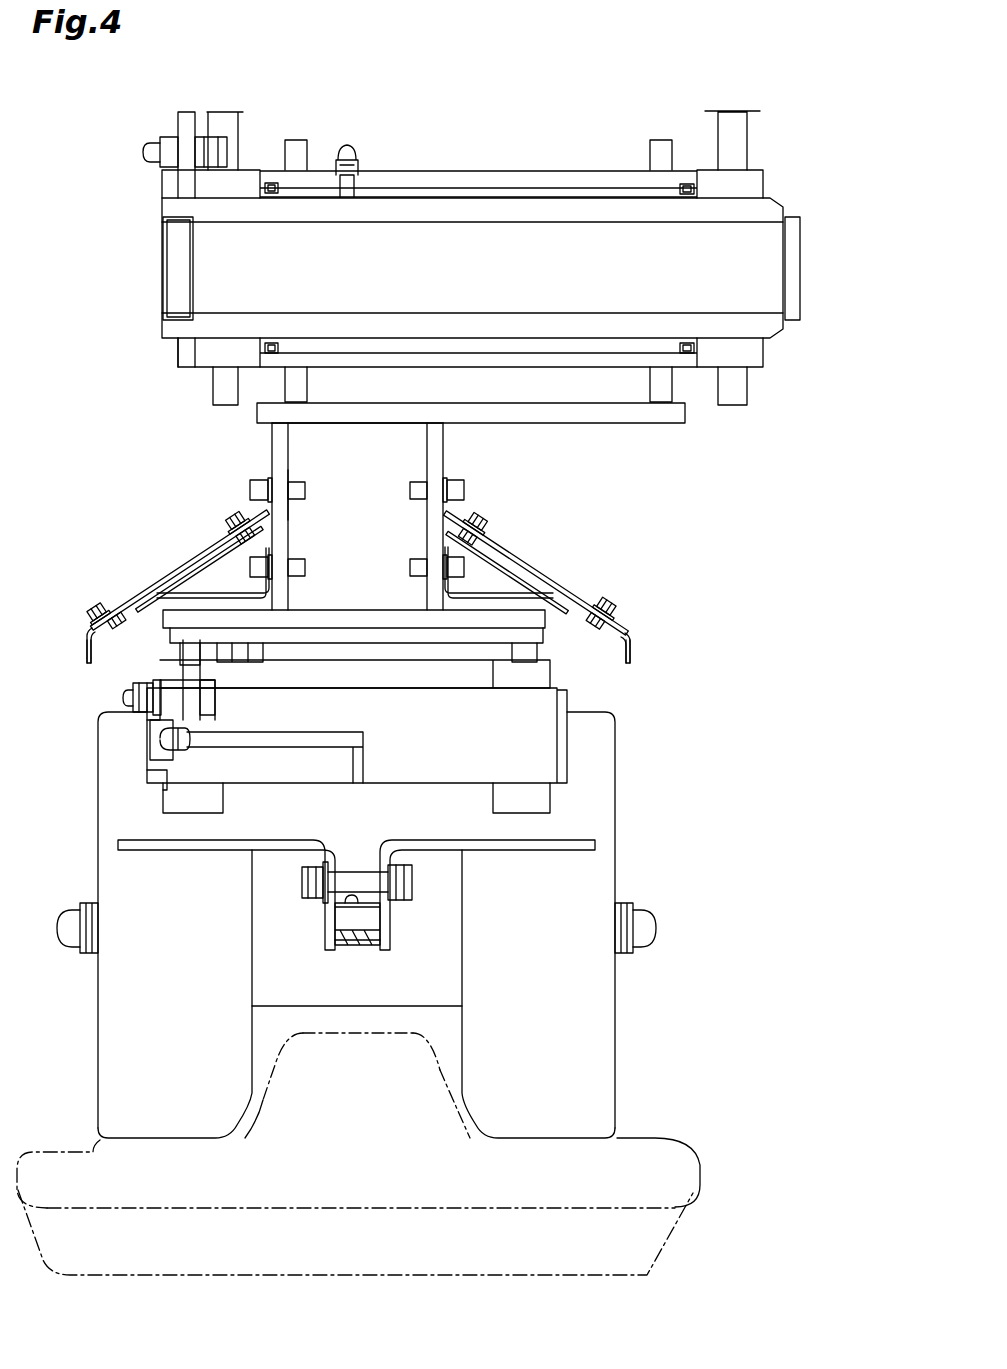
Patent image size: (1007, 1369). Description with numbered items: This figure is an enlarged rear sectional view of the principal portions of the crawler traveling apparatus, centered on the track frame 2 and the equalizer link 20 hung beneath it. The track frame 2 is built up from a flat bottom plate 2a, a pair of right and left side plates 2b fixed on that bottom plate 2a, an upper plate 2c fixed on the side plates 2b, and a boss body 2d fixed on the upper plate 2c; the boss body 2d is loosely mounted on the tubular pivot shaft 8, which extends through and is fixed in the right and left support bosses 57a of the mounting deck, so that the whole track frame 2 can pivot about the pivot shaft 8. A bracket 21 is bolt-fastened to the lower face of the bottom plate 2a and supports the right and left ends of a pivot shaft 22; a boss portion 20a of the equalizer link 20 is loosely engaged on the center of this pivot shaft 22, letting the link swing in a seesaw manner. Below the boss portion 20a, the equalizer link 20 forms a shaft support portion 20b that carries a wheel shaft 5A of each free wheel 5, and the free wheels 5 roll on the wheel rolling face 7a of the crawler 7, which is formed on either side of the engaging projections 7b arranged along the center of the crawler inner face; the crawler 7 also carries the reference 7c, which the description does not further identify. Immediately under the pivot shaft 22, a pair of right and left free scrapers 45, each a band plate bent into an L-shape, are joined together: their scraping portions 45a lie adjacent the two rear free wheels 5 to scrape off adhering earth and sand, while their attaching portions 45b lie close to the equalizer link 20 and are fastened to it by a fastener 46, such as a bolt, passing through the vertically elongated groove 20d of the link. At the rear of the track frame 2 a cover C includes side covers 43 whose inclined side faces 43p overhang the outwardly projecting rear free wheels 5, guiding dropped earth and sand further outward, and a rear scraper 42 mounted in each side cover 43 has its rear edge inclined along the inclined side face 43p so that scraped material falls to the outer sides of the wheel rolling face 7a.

The track frame 2 is at (275, 445).
The bottom plate 2a is at (353, 620).
The side plates 2b is at (427, 523).
The upper plate 2c is at (353, 413).
The boss body 2d is at (462, 165).
The pivot shaft 8 is at (220, 328).
The support bosses 57a is at (210, 187).
The rear scraper 42 is at (213, 540).
The side cover 43 is at (173, 570).
The inclined side face 43p is at (137, 597).
The cover C is at (613, 570).
The bracket 21 is at (532, 678).
The pivot shaft 22 is at (533, 738).
The equalizing link 20 is at (228, 798).
The boss portion 20a is at (290, 805).
The shaft support portion 20b is at (283, 993).
The elongated groove 20d is at (352, 903).
The free scraper 45 is at (404, 873).
The scraping portion 45a is at (585, 842).
The attaching portion 45b is at (385, 933).
The fastener 46 is at (303, 883).
The free wheel 5 is at (237, 1057).
The wheel shaft 5A is at (93, 918).
The crawler 7 is at (623, 1173).
The wheel rolling face 7a is at (537, 1137).
The engaging projections 7b is at (420, 1050).
The rail base 7c is at (667, 1237).